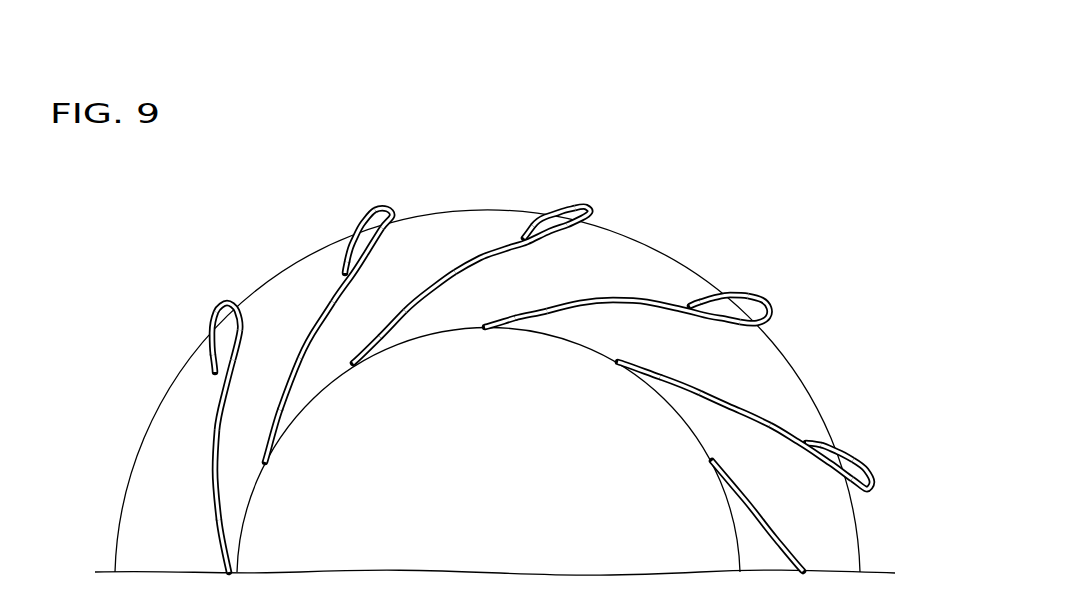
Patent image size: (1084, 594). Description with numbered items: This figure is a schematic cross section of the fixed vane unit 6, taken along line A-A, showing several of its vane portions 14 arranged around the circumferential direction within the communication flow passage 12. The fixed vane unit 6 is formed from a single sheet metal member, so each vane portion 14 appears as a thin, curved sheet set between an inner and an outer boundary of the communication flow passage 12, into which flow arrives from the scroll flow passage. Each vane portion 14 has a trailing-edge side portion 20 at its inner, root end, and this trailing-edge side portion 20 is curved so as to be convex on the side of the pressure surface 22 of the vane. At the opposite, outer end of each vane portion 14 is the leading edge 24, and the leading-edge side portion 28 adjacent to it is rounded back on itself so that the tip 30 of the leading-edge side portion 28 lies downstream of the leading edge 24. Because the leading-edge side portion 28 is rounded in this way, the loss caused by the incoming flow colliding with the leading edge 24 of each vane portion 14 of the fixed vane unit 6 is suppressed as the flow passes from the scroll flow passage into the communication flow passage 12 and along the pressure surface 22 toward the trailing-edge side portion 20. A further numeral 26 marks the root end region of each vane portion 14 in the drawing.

The fixed vane unit 6 is at (714, 133).
The communication flow passage 12 is at (840, 534).
The vane portion 14 is at (218, 410).
The trailing-edge side portion 20 is at (238, 548).
The pressure surface 22 is at (212, 493).
The leading edge 24 is at (229, 300).
The root end 26 is at (266, 468).
The leading-edge side portion 28 is at (211, 328).
The tip 30 is at (212, 372).